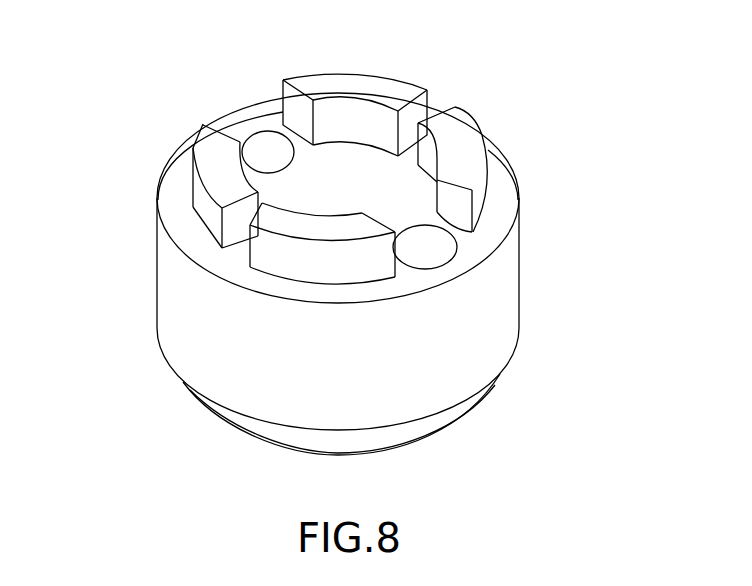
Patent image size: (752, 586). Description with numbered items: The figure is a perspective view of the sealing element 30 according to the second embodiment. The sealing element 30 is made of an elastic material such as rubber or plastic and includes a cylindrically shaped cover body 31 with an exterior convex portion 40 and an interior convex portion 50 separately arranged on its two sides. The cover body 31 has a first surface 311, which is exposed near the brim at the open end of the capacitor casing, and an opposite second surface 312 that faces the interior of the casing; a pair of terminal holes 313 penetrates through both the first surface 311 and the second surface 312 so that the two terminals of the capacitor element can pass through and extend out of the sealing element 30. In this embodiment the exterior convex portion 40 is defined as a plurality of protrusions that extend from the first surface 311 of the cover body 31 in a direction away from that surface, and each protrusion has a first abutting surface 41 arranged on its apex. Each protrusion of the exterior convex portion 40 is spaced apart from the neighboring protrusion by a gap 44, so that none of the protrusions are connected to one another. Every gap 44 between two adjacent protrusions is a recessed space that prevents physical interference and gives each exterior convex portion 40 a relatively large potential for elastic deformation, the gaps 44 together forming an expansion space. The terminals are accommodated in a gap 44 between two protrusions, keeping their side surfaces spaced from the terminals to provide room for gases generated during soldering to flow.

The sealing element 30 is at (522, 340).
The cover body 31 is at (500, 303).
The first surface 311 is at (499, 193).
The second surface 312 is at (500, 373).
The terminal holes 313 is at (440, 245).
The exterior convex portion 40 is at (350, 84).
The first abutting surface 41 is at (460, 137).
The gap 44 is at (287, 93).
The interior convex portion 50 is at (246, 427).